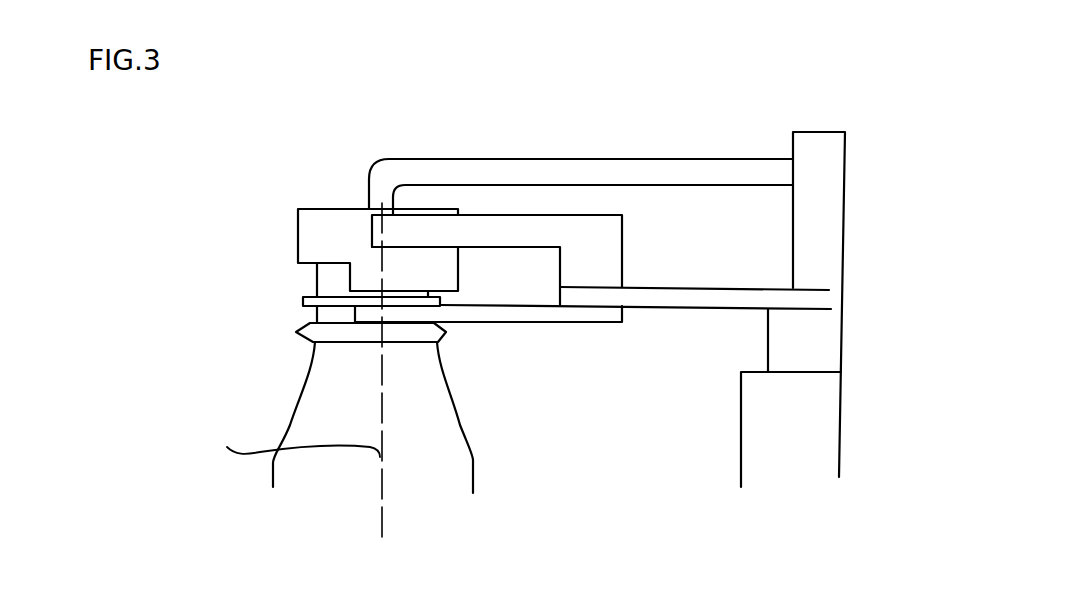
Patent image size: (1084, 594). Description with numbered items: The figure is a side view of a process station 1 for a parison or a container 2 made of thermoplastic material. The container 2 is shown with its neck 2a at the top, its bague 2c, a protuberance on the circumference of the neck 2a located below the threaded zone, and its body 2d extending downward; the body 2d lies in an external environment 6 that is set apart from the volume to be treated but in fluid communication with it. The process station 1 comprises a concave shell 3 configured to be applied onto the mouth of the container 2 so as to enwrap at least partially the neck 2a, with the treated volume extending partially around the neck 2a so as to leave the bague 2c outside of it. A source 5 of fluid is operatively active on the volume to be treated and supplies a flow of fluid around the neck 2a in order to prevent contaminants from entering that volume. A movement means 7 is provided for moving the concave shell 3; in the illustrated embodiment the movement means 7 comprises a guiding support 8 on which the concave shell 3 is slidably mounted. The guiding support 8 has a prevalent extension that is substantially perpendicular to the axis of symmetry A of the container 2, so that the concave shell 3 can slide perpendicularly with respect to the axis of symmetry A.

The process station 1 is at (182, 232).
The container 2 is at (226, 387).
The neck 2a is at (288, 318).
The bague 2c is at (443, 332).
The body 2d is at (478, 450).
The concave shell 3 is at (308, 203).
The source of fluid 5 is at (800, 122).
The external environment 6 is at (585, 490).
The movement means 7 is at (646, 334).
The guiding support 8 is at (630, 226).
The axis of symmetry A is at (290, 453).